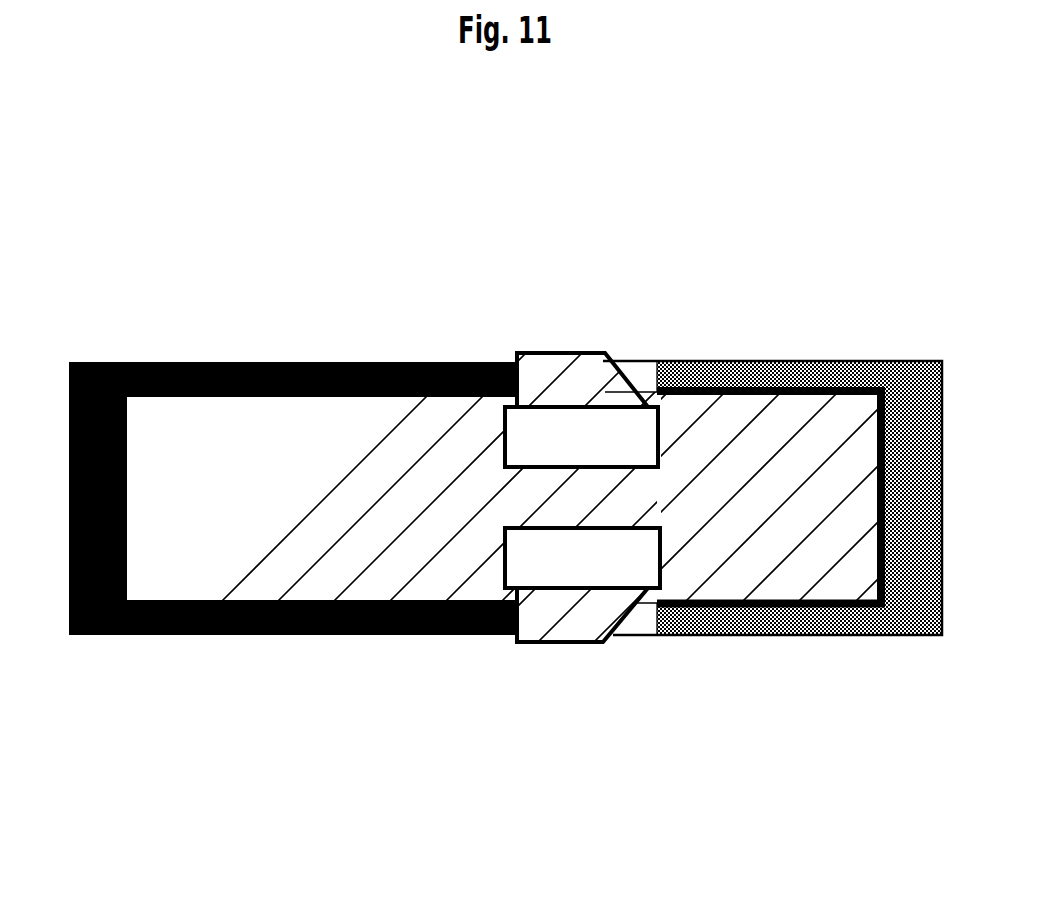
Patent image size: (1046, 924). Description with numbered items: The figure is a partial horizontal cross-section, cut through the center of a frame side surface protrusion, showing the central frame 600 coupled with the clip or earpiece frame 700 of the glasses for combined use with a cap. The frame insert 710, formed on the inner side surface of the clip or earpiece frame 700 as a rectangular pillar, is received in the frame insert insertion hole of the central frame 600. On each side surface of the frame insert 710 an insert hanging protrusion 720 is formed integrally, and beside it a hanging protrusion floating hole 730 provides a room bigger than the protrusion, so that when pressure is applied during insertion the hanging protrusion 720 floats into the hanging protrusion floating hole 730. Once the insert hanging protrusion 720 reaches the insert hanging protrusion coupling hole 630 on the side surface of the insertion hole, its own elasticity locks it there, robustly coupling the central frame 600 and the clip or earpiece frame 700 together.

The central frame 600 is at (918, 365).
The insert hanging protrusion coupling hole 630 is at (592, 392).
The clip or earpiece frame 700 is at (112, 363).
The frame insert 710 is at (242, 415).
The insert hanging protrusion 720 is at (425, 698).
The hanging protrusion floating hole 730 is at (617, 442).